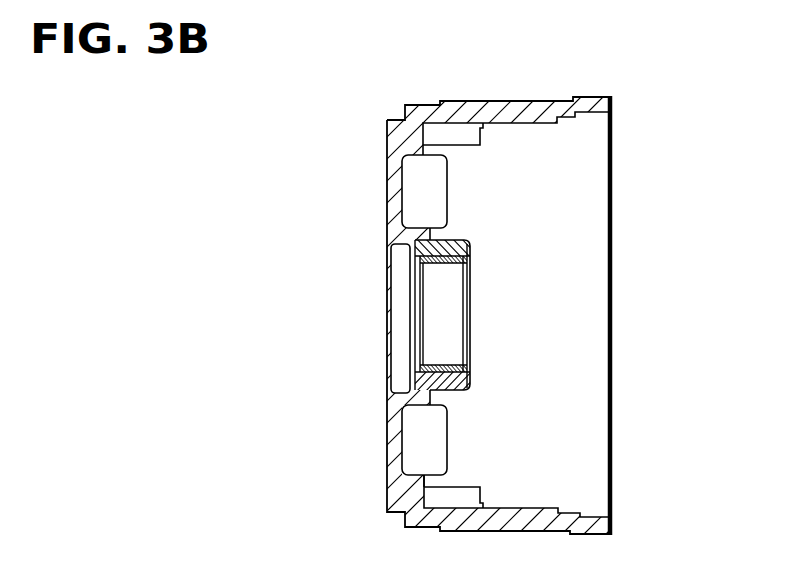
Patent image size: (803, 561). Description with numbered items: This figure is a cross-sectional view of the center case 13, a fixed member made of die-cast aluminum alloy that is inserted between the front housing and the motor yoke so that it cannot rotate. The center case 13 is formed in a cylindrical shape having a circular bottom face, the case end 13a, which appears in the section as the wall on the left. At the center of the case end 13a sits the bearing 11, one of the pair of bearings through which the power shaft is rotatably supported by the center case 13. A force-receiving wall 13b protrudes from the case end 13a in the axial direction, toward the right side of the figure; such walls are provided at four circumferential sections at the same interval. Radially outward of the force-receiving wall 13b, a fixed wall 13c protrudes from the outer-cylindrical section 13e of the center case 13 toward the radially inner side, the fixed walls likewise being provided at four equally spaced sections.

The bearing 11 is at (447, 367).
The center case 13 is at (606, 82).
The case end 13a is at (390, 192).
The force-receiving wall 13b is at (440, 188).
The fixed wall 13c is at (460, 133).
The outer-cylindrical section 13e is at (525, 110).